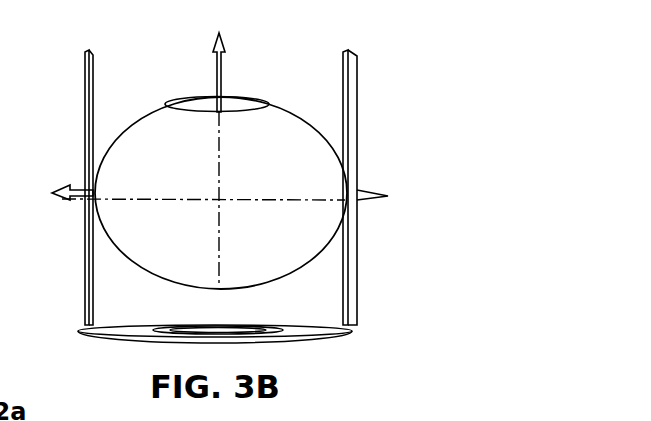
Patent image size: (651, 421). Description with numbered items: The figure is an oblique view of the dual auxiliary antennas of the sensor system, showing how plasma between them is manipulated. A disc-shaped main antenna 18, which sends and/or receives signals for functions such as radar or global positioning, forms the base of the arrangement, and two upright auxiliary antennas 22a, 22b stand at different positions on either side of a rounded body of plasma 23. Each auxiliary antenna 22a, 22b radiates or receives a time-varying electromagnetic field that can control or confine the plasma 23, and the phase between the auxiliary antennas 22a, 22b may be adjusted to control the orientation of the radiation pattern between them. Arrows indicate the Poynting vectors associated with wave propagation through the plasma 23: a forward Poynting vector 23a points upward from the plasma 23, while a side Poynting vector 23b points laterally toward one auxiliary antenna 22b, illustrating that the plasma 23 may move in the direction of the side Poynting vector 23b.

The main antenna 18 is at (313, 336).
The auxiliary antenna 22a is at (358, 67).
The auxiliary antenna 22b is at (94, 66).
The plasma 23 is at (290, 240).
The forward Poynting vector 23a is at (223, 70).
The side Poynting vector 23b is at (79, 186).